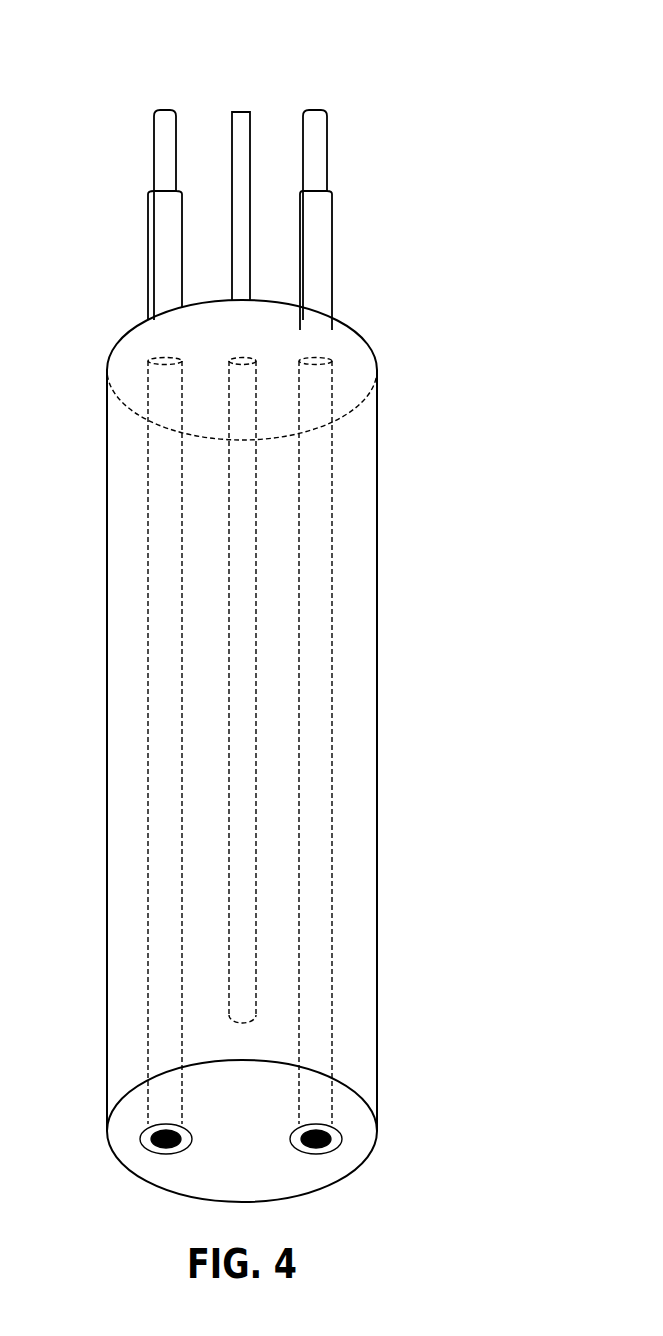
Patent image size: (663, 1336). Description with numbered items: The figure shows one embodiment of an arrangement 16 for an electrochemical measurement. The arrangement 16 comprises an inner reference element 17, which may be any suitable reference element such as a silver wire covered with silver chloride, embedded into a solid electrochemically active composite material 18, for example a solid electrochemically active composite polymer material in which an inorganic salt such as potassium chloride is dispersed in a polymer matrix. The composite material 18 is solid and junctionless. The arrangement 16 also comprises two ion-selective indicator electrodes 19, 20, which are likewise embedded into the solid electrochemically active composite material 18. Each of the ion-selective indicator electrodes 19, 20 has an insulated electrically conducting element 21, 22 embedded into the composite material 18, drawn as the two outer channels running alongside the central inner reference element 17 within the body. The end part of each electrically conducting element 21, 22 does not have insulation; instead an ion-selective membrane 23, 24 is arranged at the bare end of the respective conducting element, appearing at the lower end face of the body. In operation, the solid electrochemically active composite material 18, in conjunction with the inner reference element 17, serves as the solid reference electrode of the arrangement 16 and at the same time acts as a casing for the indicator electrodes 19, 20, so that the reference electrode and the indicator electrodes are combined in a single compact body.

The arrangement for an electrochemical measurement 16 is at (461, 191).
The inner reference element 17 is at (257, 730).
The solid electrochemically active composite material 18 is at (377, 552).
The ion-selective indicator electrode 19 is at (176, 113).
The ion-selective indicator electrode 20 is at (327, 145).
The insulated electrically conducting element 21 is at (148, 745).
The insulated electrically conducting element 22 is at (332, 827).
The ion-selective membrane 23 is at (145, 1142).
The ion-selective membrane 24 is at (335, 1142).